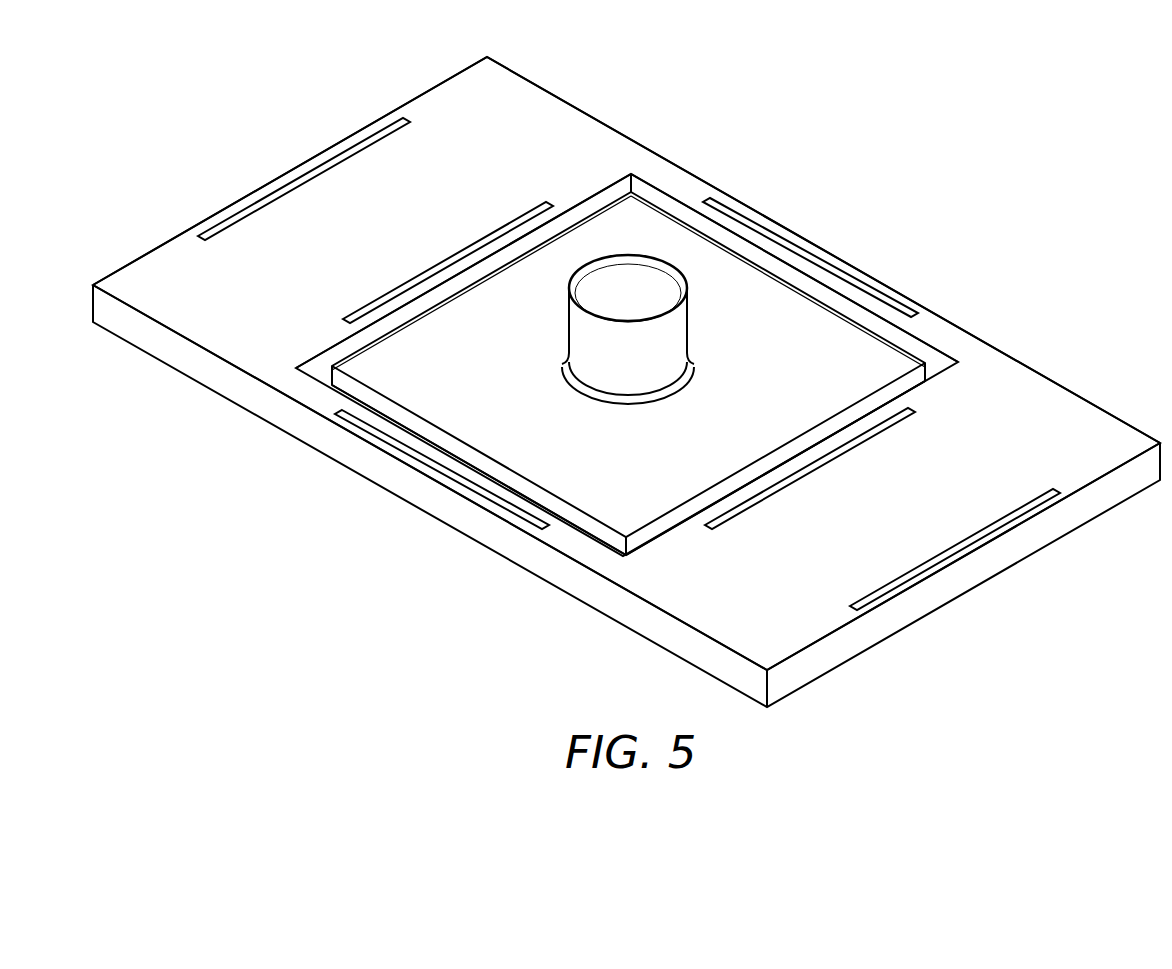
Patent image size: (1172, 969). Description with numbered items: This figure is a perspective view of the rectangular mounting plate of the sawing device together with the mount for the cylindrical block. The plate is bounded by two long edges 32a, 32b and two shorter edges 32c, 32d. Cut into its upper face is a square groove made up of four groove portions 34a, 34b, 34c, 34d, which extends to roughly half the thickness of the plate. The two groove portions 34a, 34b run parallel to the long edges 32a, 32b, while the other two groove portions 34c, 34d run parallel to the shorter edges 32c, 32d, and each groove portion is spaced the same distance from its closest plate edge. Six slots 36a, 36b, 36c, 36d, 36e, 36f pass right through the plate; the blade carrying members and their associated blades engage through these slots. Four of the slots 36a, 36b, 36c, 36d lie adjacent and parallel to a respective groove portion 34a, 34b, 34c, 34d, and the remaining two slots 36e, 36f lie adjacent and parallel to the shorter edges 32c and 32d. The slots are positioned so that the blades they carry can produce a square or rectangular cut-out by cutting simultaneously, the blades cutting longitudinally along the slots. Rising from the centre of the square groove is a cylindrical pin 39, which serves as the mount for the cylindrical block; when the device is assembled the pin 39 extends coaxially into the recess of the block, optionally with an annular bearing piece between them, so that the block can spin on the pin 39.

The long edge 32a is at (640, 622).
The long edge 32b is at (1045, 375).
The shorter edge 32c is at (421, 92).
The shorter edge 32d is at (855, 643).
The groove portion 34a is at (587, 523).
The groove portion 34b is at (917, 347).
The groove portion 34c is at (587, 205).
The groove portion 34d is at (872, 403).
The slot 36a is at (447, 477).
The slot 36b is at (810, 257).
The slot 36c is at (450, 260).
The slot 36d is at (783, 480).
The slot 36e is at (307, 174).
The slot 36f is at (947, 555).
The cylindrical pin 39 is at (676, 328).